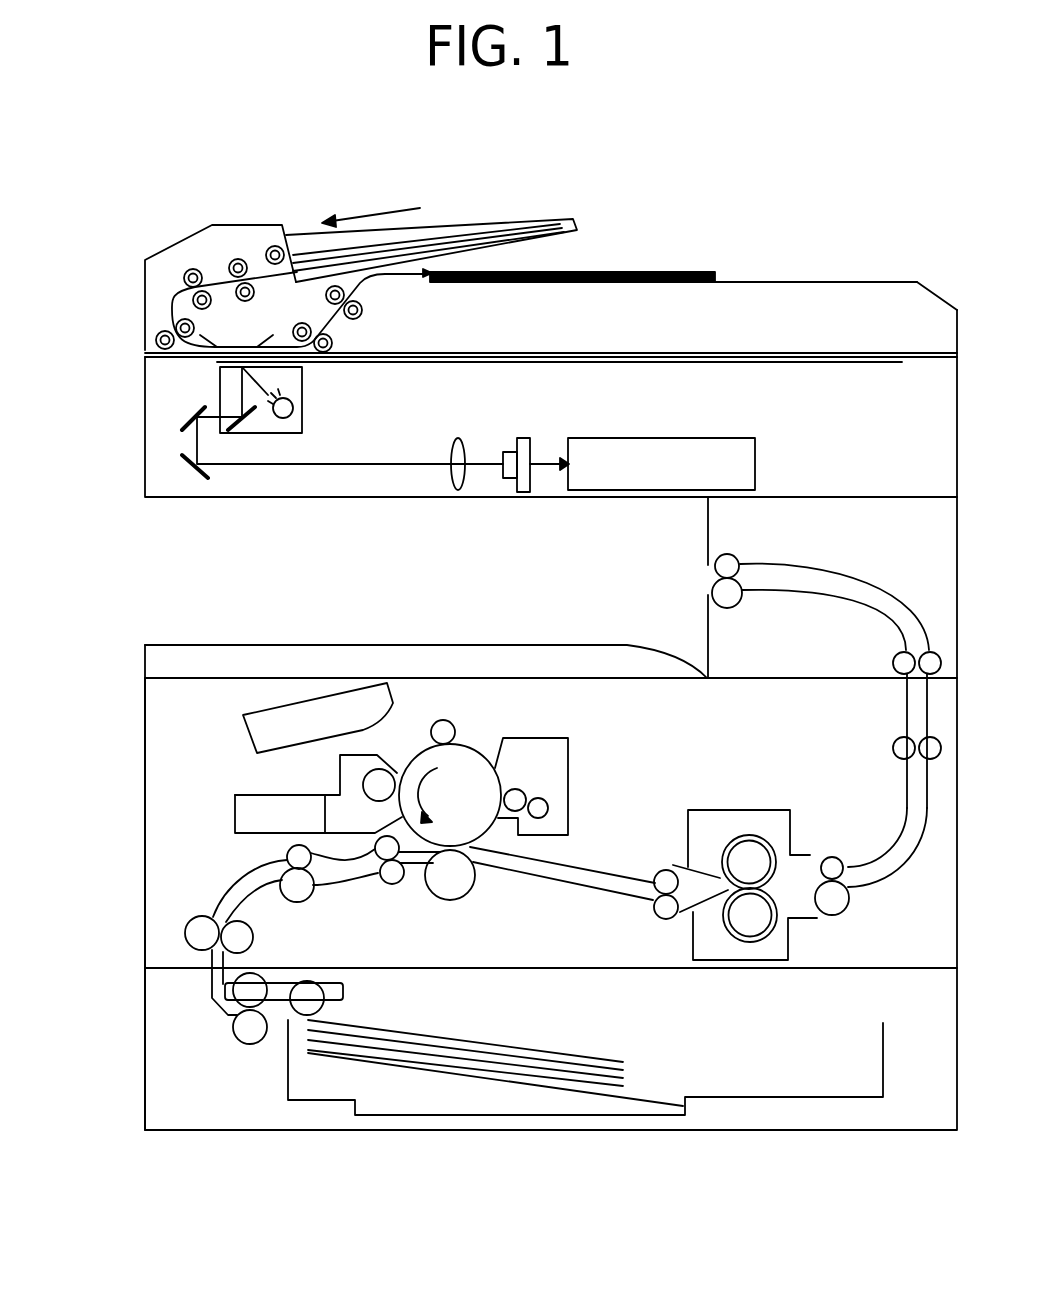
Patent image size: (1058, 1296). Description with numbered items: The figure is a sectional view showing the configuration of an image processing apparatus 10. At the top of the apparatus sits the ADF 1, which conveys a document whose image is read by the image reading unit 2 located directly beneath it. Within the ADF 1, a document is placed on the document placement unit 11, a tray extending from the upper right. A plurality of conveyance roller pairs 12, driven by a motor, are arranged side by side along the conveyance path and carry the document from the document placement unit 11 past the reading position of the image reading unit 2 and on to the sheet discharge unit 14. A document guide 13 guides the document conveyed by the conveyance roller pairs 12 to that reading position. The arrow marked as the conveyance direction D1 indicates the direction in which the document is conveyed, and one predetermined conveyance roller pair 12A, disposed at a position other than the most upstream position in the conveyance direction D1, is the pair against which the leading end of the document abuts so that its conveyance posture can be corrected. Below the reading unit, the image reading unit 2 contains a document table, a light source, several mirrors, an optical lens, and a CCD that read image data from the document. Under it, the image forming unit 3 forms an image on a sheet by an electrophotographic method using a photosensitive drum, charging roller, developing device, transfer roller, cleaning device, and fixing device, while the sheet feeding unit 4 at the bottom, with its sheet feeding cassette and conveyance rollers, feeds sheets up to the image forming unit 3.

The image processing apparatus 10 is at (130, 181).
The ADF 1 is at (145, 292).
The document placement unit 11 is at (495, 220).
The conveyance roller pairs 12 is at (238, 259).
The predetermined conveyance roller pair 12A is at (193, 269).
The document guide 13 is at (233, 347).
The sheet discharge unit 14 is at (773, 282).
The image reading unit 2 is at (145, 442).
The image forming unit 3 is at (177, 707).
The sheet feeding unit 4 is at (145, 1055).
The conveyance direction D1 is at (377, 210).